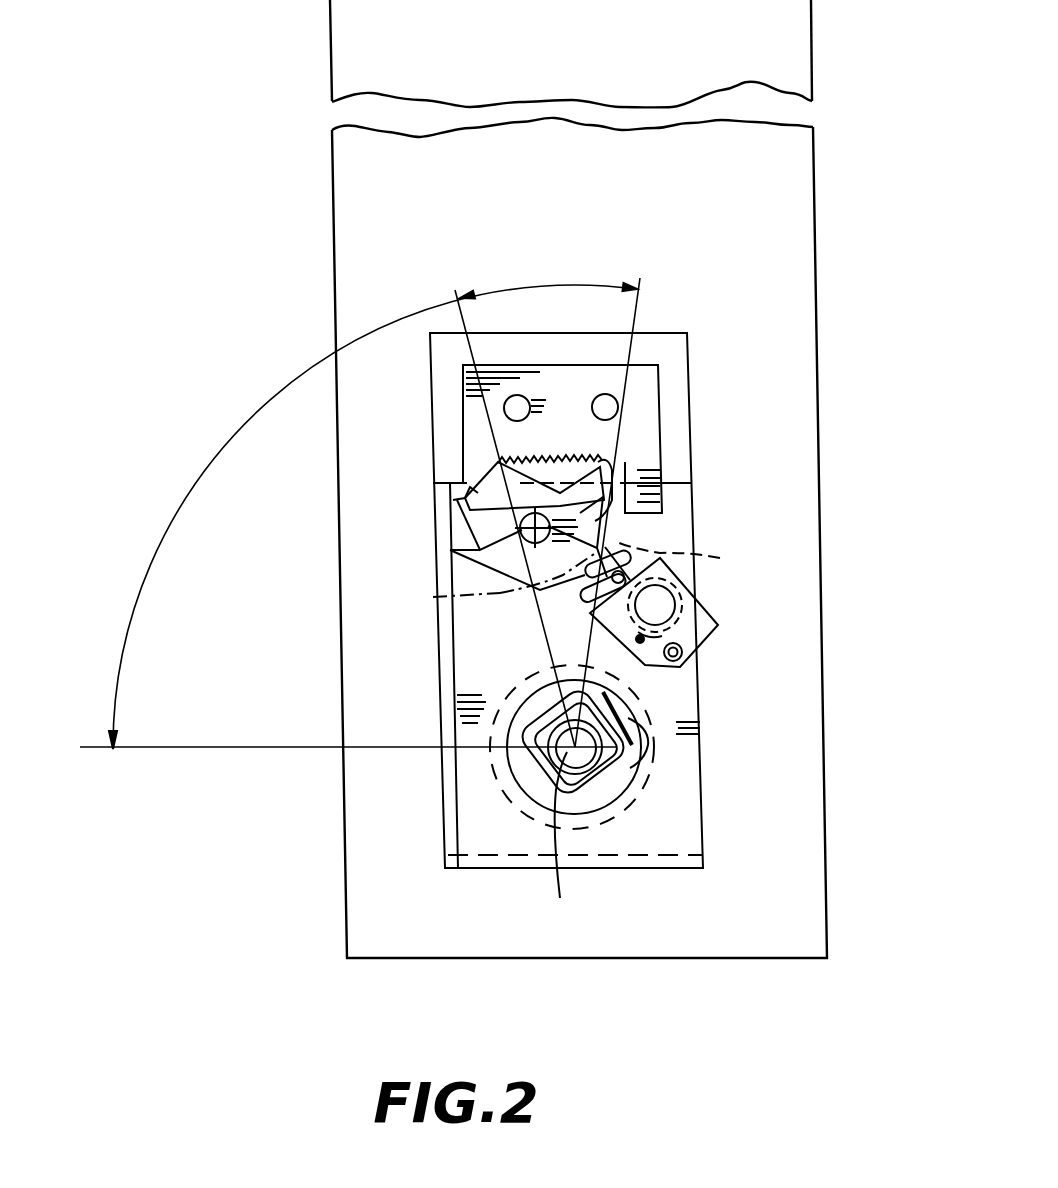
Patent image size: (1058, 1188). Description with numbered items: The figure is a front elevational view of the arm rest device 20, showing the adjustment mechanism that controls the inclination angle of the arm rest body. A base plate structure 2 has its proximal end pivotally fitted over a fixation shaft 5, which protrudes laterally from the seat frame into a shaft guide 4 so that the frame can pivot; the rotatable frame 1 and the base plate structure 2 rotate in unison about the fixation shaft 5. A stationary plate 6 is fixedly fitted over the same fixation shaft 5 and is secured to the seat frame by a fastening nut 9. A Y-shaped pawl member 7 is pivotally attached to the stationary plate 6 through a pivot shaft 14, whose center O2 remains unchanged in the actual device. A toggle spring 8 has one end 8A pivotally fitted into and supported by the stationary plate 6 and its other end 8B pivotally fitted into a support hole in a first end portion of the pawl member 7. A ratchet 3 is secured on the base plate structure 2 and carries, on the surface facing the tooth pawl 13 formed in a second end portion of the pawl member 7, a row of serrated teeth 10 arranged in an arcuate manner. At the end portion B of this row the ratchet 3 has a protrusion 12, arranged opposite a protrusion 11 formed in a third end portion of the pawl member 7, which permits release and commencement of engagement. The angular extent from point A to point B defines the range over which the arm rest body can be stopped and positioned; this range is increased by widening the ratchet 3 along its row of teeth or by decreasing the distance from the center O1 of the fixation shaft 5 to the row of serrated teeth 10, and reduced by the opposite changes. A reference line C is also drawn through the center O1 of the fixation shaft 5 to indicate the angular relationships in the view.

The rotatable frame 1 is at (797, 203).
The arm rest device 20 is at (892, 120).
The base plate structure 2 is at (673, 367).
The ratchet 3 is at (645, 378).
The shaft guide 4 is at (650, 737).
The fixation shaft 5 is at (650, 767).
The stationary plate 6 is at (680, 565).
The Y-shaped pawl member 7 is at (578, 543).
The toggle spring 8 is at (720, 558).
The one end of toggle spring 8A is at (657, 663).
The other end of toggle spring 8B is at (587, 577).
The fastening nut 9 is at (552, 836).
The row of serrated teeth 10 is at (553, 455).
The protrusion of pawl member 11 is at (460, 503).
The protrusion of ratchet 12 is at (470, 488).
The tooth pawl 13 is at (605, 460).
The pivot shaft 14 is at (457, 552).
The center of fixation shaft O1 is at (580, 752).
The center of pivot shaft O2 is at (530, 543).
The point A is at (640, 288).
The end portion B is at (466, 290).
The position C is at (93, 752).